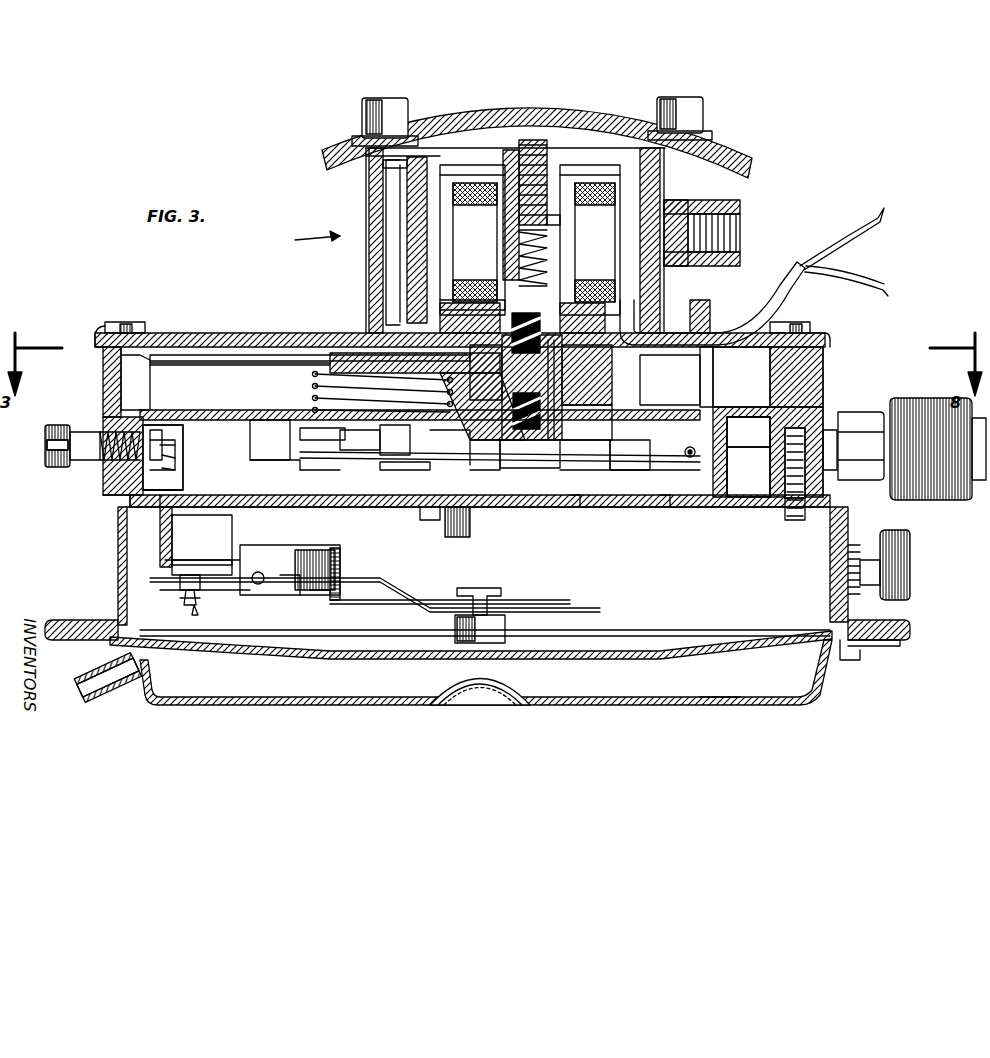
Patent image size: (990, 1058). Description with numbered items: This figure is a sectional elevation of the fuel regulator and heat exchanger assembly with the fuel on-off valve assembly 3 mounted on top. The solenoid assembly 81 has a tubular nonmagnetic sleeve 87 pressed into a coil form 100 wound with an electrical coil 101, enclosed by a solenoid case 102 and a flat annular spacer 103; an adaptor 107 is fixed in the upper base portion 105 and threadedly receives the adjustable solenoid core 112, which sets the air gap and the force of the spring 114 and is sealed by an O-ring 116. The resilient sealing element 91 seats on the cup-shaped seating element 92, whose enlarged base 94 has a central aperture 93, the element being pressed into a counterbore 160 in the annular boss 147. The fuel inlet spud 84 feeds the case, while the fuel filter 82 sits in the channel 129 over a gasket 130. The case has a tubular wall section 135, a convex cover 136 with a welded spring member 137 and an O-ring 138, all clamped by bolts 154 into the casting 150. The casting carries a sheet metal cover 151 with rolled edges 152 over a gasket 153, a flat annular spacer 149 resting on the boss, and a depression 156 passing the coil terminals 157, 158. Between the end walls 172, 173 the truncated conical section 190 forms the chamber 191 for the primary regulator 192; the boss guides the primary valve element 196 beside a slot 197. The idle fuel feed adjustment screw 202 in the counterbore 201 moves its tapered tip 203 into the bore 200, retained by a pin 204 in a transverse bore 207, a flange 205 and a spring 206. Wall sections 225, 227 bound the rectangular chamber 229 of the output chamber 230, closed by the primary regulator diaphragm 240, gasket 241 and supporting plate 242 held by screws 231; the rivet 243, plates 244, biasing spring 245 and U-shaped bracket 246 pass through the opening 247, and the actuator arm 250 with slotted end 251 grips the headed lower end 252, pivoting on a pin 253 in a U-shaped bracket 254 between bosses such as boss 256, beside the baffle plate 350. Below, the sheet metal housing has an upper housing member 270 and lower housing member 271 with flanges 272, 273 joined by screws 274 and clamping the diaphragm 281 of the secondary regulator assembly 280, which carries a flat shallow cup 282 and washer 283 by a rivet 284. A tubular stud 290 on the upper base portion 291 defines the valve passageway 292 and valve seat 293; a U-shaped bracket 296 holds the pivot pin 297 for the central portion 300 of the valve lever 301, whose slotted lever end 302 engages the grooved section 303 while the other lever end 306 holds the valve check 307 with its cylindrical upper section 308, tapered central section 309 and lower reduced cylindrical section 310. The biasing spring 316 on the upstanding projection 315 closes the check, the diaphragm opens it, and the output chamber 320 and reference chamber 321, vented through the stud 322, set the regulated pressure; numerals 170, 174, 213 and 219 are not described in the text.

The fuel on-off valve assembly 3 is at (308, 238).
The solenoid assembly 81 is at (475, 165).
The fuel filter 82 is at (660, 178).
The fuel inlet spud 84 is at (740, 228).
The tubular nonmagnetic sleeve 87 is at (498, 208).
The resilient sealing element 91 is at (486, 348).
The seating element 92 is at (575, 370).
The central aperture 93 is at (578, 385).
The enlarged base 94 is at (578, 398).
The coil form 100 is at (378, 178).
The electrical coil 101 is at (415, 225).
The solenoid case 102 is at (440, 160).
The flat annular spacer 103 is at (470, 275).
The upper base portion 105 is at (605, 160).
The adaptor 107 is at (560, 152).
The adjustable solenoid core 112 is at (552, 218).
The spring 114 is at (548, 248).
The sealing O-ring 116 is at (503, 260).
The channel 129 is at (668, 315).
The flat annular gasket 130 is at (420, 305).
The tubular wall section 135 is at (372, 250).
The convex cover 136 is at (735, 158).
The spring member 137 is at (400, 168).
The O-ring 138 is at (380, 158).
The annular boss 147 is at (700, 355).
The flat annular spacer 149 is at (852, 690).
The casting 150 is at (824, 365).
The sheet metal cover 151 is at (175, 340).
The rolled edges 152 is at (100, 342).
The gasket 153 is at (300, 340).
The bolts 154 is at (703, 112).
The depression 156 is at (718, 378).
The coil winding terminal 157 is at (860, 236).
The coil winding terminal 158 is at (858, 282).
The counterbore 160 is at (562, 350).
The end wall 170 is at (110, 372).
The end wall 172 is at (105, 494).
The end wall 173 is at (826, 345).
The tab 174 is at (238, 340).
The truncated conical section 190 is at (320, 357).
The primary regulator chamber 191 is at (330, 364).
The primary regulator 192 is at (385, 455).
The primary valve element 196 is at (540, 456).
The slot 197 is at (572, 422).
The bore 200 is at (175, 445).
The counterbore 201 is at (163, 445).
The idle fuel feed adjustment screw 202 is at (62, 425).
The tapered tip 203 is at (175, 458).
The pin 204 is at (175, 470).
The flange 205 is at (157, 430).
The spring 206 is at (96, 428).
The transverse bore 207 is at (110, 472).
The passage 213 is at (718, 462).
The chamber 219 is at (760, 442).
The wall section 225 is at (250, 460).
The wall section 227 is at (572, 470).
The rectangular chamber 229 is at (435, 500).
The output chamber 230 is at (635, 499).
The screws 231 is at (530, 468).
The primary regulator diaphragm 240 is at (315, 385).
The gasket 241 is at (272, 445).
The supporting plate 242 is at (465, 465).
The rivet 243 is at (335, 470).
The plates 244 is at (318, 442).
The biasing spring 245 is at (330, 372).
The U-shaped bracket 246 is at (298, 470).
The opening 247 is at (485, 470).
The actuator arm 250 is at (610, 470).
The slotted end 251 is at (350, 452).
The headed lower end 252 is at (405, 470).
The pin 253 is at (686, 456).
The U-shaped bracket 254 is at (690, 500).
The boss 256 is at (716, 410).
The upper housing member 270 is at (845, 535).
The lower housing member 271 is at (718, 700).
The peripheral flange 272 is at (890, 622).
The peripheral flange 273 is at (882, 642).
The screws 274 is at (848, 660).
The secondary regulator assembly 280 is at (442, 570).
The diaphragm 281 is at (238, 662).
The flat shallow cup 282 is at (598, 632).
The washer 283 is at (442, 666).
The rivet 284 is at (505, 620).
The tubular stud 290 is at (172, 555).
The upper base portion 291 is at (168, 500).
The valve passageway 292 is at (165, 527).
The valve seat 293 is at (165, 560).
The U-shaped bracket 296 is at (322, 596).
The pivot pin 297 is at (258, 590).
The central portion 300 is at (292, 595).
The valve lever 301 is at (398, 596).
The lever end 302 is at (512, 604).
The grooved section 303 is at (500, 600).
The lever end 306 is at (184, 592).
The valve check 307 is at (178, 588).
The cylindrical upper section 308 is at (160, 590).
The tapered central section 309 is at (180, 600).
The lower reduced cylindrical section 310 is at (205, 600).
The upstanding projection 315 is at (308, 578).
The biasing spring 316 is at (335, 556).
The output chamber 320 is at (700, 612).
The reference chamber 321 is at (663, 692).
The stud 322 is at (106, 694).
The baffle plate 350 is at (470, 505).